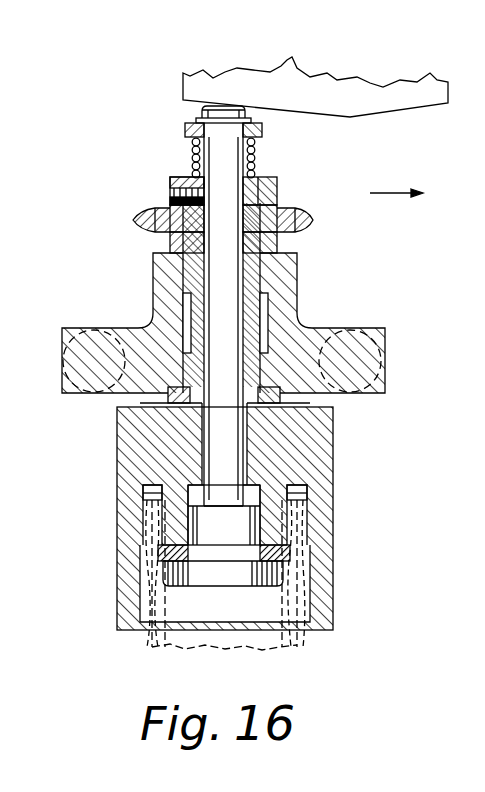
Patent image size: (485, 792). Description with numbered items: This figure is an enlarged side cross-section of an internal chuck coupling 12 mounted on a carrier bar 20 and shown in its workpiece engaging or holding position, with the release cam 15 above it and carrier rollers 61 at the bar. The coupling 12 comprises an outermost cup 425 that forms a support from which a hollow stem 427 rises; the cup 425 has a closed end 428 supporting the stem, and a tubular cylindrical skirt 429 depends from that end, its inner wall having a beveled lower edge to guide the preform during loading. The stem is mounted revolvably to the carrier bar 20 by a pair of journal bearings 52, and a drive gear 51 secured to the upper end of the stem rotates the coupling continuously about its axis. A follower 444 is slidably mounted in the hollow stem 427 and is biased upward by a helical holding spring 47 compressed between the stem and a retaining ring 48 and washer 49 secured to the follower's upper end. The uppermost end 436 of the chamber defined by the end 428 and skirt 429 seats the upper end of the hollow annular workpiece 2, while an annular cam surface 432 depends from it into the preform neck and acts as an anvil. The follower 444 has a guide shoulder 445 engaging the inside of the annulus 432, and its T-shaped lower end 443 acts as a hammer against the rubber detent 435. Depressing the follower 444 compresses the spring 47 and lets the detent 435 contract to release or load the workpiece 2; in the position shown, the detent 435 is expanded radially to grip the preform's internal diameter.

The workpiece 2 is at (293, 644).
The coupling 12 is at (96, 457).
The cam 15 is at (301, 110).
The carrier bar 20 is at (387, 341).
The holding spring 47 is at (256, 155).
The retaining ring 48 is at (198, 122).
The washer 49 is at (262, 132).
The drive gear 51 is at (140, 217).
The journal bearings 52 is at (278, 243).
The carrier rollers 61 is at (62, 350).
The cup 425 is at (322, 437).
The hollow stem 427 is at (157, 311).
The closed end 428 is at (111, 404).
The skirt 429 is at (117, 589).
The annular cam surface 432 is at (150, 529).
The detent 435 is at (291, 548).
The uppermost end of chamber 436 is at (302, 484).
The lower end of follower 443 is at (242, 577).
The follower 444 is at (238, 257).
The guide shoulder 445 is at (228, 536).